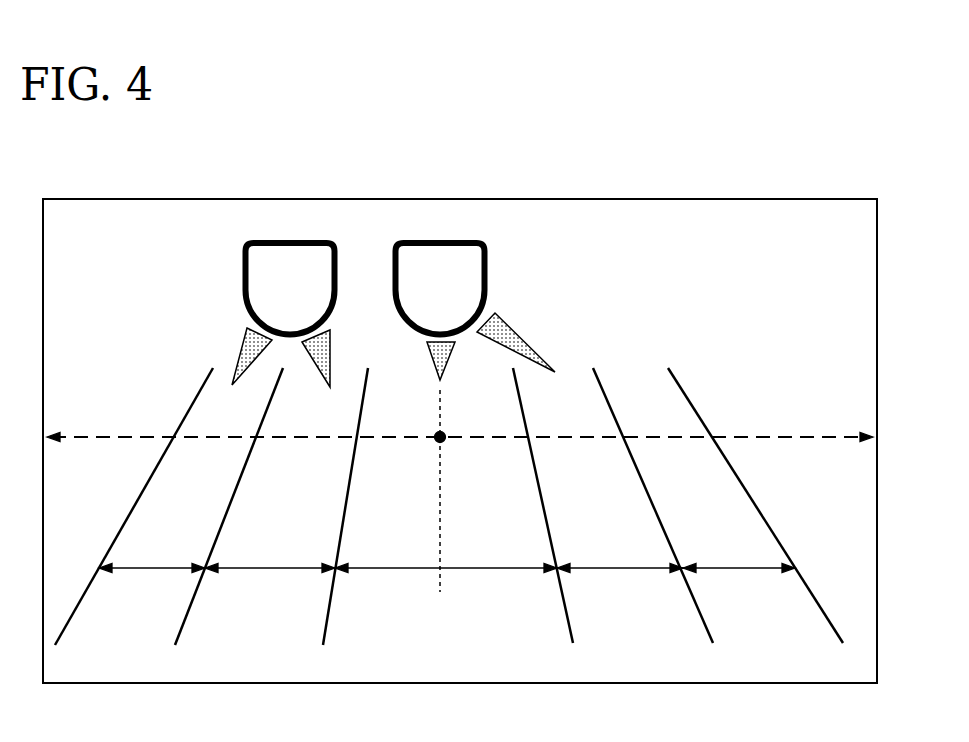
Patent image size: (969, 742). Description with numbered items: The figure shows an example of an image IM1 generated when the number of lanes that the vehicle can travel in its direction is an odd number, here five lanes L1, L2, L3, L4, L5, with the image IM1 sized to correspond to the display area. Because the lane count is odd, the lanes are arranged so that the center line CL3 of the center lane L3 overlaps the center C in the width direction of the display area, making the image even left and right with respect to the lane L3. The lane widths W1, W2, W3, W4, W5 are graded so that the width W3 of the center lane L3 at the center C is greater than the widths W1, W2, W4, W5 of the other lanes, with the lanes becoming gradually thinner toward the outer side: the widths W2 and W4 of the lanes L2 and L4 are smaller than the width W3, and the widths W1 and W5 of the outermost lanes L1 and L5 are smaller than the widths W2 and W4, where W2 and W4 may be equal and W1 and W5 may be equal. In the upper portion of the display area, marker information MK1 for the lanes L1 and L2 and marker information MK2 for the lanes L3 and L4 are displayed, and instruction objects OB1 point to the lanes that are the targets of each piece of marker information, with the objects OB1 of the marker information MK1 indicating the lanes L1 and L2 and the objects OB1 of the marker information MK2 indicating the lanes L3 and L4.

The image IM1 is at (810, 199).
The marker information MK1 is at (295, 228).
The marker information MK2 is at (442, 228).
The instruction object OB1 is at (236, 346).
The center C is at (438, 443).
The center line CL3 is at (442, 477).
The lane L1 is at (137, 645).
The lane L2 is at (270, 645).
The center lane L3 is at (455, 645).
The lane L4 is at (658, 645).
The lane L5 is at (788, 645).
The lane width W1 is at (158, 566).
The lane width W2 is at (272, 566).
The lane width W3 is at (493, 566).
The lane width W4 is at (620, 566).
The lane width W5 is at (732, 566).